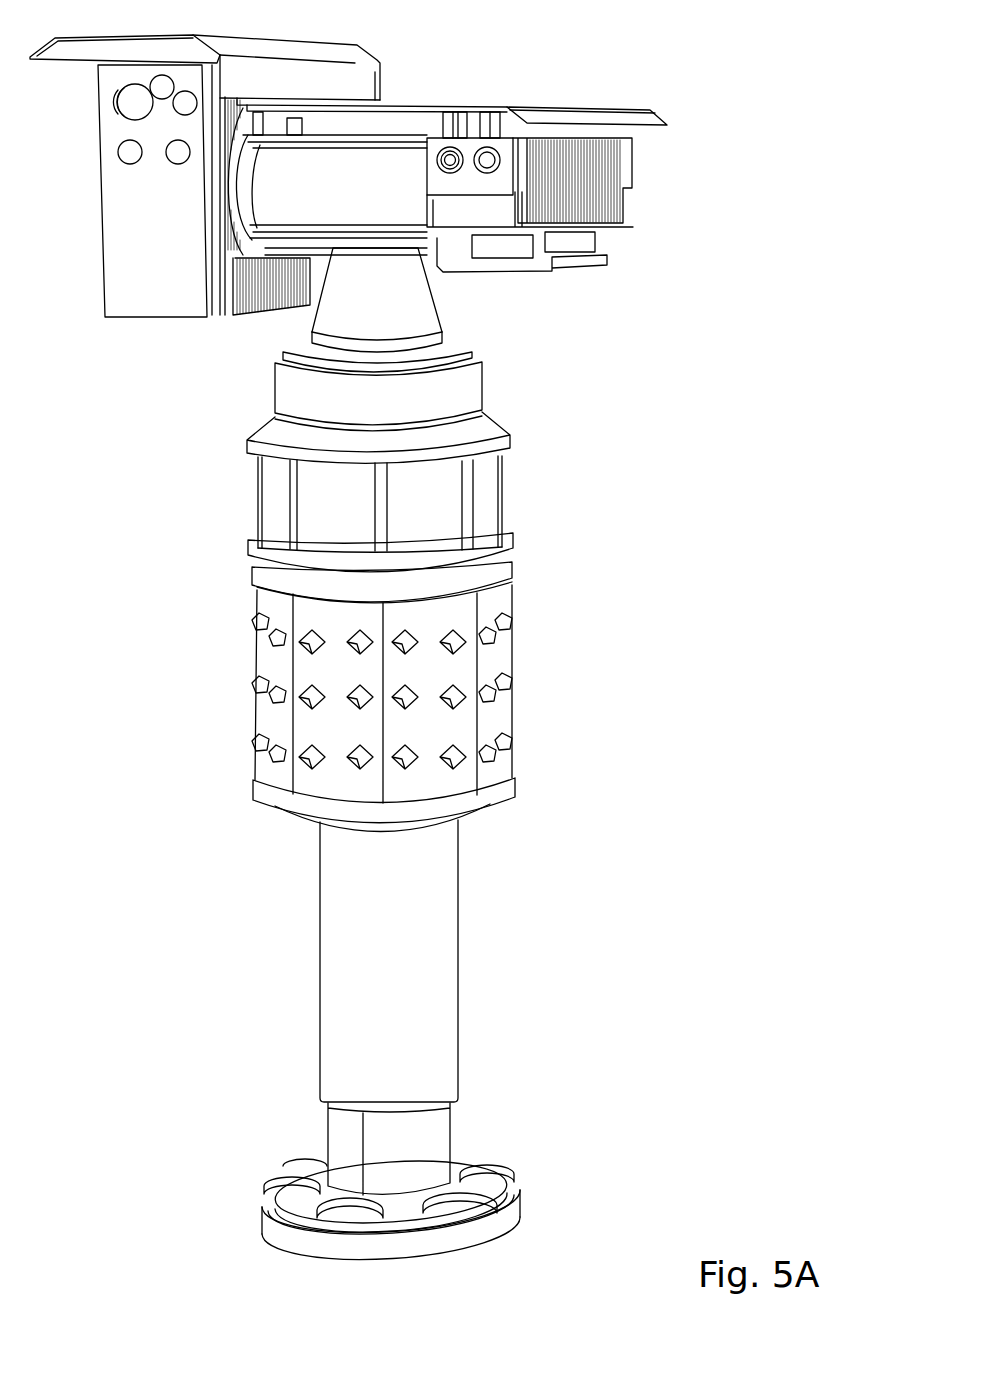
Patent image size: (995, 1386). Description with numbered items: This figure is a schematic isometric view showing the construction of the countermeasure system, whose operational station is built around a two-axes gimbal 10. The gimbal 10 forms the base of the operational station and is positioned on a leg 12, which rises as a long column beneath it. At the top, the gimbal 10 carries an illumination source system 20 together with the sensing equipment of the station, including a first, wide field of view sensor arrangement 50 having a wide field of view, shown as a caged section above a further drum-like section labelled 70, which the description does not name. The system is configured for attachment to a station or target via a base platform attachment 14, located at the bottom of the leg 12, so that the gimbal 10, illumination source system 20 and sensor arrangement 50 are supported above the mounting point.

The illumination source system 20 is at (688, 167).
The two-axes gimbal 10 is at (388, 287).
The wide field of view sensor arrangement 50 is at (478, 512).
The cutter drum 70 is at (492, 718).
The leg 12 is at (425, 958).
The base platform attachment 14 is at (512, 1223).